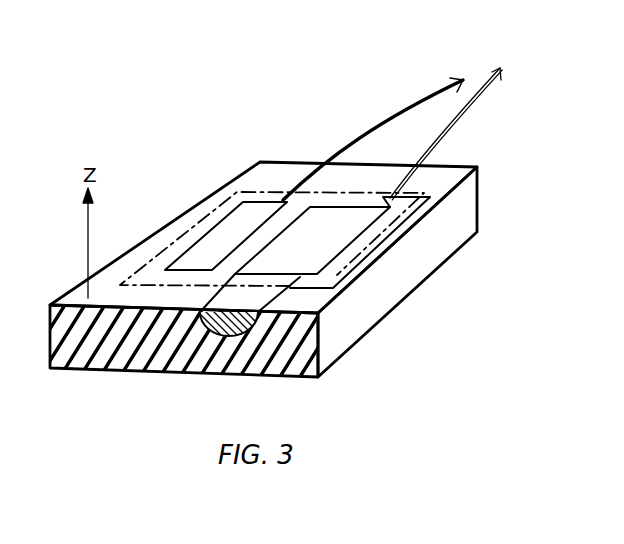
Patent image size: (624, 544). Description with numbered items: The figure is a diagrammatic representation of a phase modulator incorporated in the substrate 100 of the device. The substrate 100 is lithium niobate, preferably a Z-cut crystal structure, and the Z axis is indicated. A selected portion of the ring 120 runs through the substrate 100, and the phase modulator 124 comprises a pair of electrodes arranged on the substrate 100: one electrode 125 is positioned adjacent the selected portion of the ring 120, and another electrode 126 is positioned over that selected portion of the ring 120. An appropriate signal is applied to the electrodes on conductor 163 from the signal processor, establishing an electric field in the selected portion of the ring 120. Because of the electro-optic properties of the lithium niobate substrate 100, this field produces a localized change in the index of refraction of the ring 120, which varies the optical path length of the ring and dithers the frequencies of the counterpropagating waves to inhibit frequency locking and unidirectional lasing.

The substrate 100 is at (90, 363).
The ring 120 is at (218, 332).
The phase modulator 124 is at (177, 228).
The electrode 125 is at (235, 226).
The electrode 126 is at (331, 249).
The conductor 163 is at (448, 32).